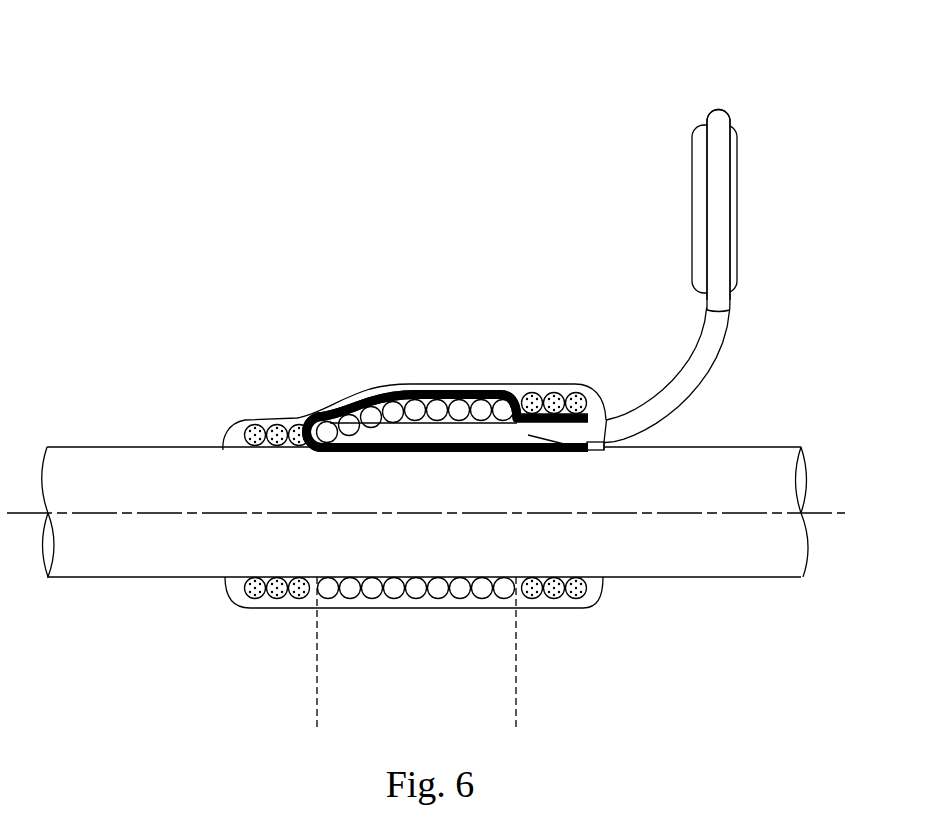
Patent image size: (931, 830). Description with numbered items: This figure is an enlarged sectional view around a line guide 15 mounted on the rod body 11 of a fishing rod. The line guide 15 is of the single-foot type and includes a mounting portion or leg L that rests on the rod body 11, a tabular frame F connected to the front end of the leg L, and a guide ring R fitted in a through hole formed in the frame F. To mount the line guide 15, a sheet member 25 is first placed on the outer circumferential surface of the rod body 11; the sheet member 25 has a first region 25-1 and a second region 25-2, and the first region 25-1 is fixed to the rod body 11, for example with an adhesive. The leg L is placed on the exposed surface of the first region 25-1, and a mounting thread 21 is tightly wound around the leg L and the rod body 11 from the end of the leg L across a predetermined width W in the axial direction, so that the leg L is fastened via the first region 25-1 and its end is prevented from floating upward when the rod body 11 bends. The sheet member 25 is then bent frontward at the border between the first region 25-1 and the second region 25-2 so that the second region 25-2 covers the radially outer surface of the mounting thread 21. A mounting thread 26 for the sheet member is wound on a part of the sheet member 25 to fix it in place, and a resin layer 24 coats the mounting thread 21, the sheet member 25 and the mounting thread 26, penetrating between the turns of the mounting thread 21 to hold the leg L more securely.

The rod body 11 is at (60, 462).
The line guide 15 is at (717, 122).
The mounting thread 21 is at (483, 393).
The resin layer 24 is at (514, 390).
The sheet member 25 is at (383, 300).
The first region 25-1 is at (378, 390).
The second region 25-2 is at (432, 390).
The mounting thread for the sheet member 26 is at (260, 422).
The guide ring R is at (695, 252).
The frame F is at (723, 296).
The leg L is at (588, 450).
The width W is at (507, 655).